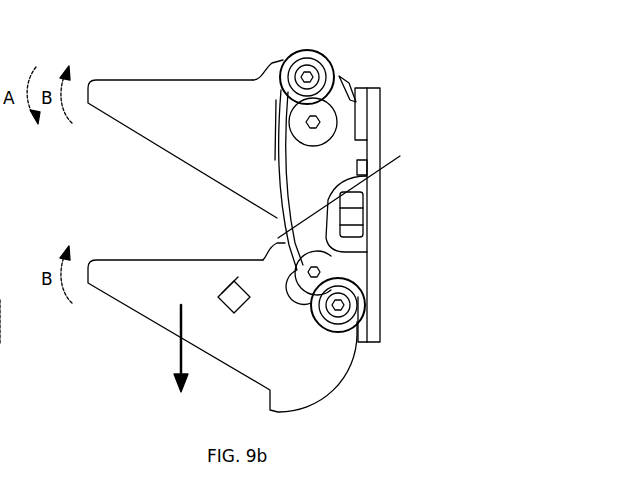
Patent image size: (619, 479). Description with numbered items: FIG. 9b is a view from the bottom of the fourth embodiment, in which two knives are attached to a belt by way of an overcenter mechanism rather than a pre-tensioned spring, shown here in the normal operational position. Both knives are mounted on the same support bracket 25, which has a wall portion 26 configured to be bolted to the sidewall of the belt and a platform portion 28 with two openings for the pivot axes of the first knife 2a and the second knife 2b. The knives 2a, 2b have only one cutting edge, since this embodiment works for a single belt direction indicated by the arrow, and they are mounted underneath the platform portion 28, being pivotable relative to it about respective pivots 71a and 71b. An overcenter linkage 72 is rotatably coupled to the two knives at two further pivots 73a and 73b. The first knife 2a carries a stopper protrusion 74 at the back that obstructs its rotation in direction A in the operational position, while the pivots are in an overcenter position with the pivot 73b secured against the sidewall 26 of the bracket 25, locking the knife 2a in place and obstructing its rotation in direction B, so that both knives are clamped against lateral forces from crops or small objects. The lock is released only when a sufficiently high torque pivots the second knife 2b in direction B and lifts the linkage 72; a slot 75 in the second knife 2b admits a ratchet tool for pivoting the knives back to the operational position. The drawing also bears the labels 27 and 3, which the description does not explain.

The first knife 2a is at (168, 97).
The second knife 2b is at (160, 306).
The base 3 is at (1, 384).
The support bracket 25 is at (0, 192).
The wall portion 26 is at (380, 104).
The latch button 27 is at (355, 212).
The platform portion 28 is at (385, 172).
The pivot 71a is at (313, 122).
The pivot 71b is at (325, 272).
The overcenter linkage 72 is at (278, 183).
The further pivot 73a is at (312, 78).
The further pivot 73b is at (340, 305).
The stopper protrusion 74 is at (400, 156).
The slot 75 is at (234, 296).